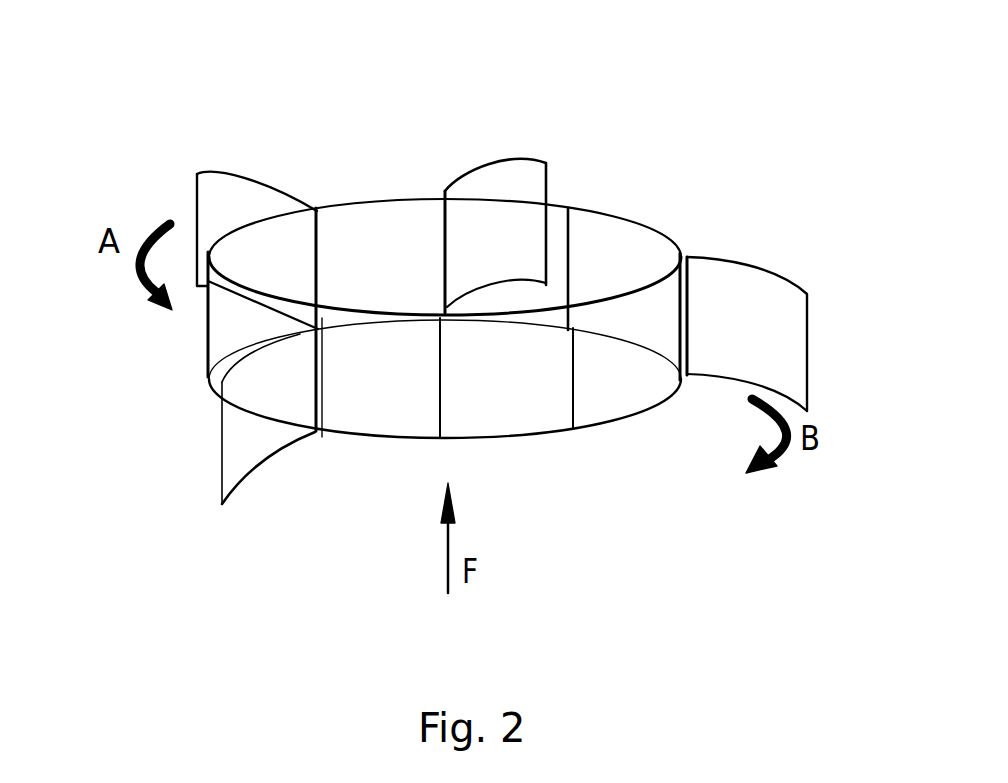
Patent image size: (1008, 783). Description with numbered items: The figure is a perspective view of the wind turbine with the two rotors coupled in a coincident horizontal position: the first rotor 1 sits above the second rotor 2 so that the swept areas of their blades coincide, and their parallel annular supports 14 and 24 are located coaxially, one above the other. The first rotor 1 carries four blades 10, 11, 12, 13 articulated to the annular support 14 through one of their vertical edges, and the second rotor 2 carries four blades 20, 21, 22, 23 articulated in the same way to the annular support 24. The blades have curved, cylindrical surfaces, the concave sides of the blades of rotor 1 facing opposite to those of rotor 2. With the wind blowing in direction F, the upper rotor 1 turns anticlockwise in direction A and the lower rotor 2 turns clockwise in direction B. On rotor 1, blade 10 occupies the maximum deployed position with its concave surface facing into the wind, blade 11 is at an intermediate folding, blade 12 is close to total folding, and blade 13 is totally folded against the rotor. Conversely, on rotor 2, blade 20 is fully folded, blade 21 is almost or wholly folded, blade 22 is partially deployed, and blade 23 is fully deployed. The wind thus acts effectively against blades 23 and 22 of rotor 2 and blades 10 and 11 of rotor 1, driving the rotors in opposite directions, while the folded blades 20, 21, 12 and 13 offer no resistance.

The first rotor 1 is at (481, 274).
The second rotor 2 is at (692, 441).
The blade 10 is at (773, 268).
The blade 11 is at (478, 170).
The blade 12 is at (207, 351).
The blade 13 is at (442, 388).
The annular support 14 is at (657, 231).
The blade 20 is at (619, 427).
The blade 21 is at (571, 231).
The blade 22 is at (247, 175).
The blade 23 is at (268, 457).
The annular support 24 is at (537, 438).